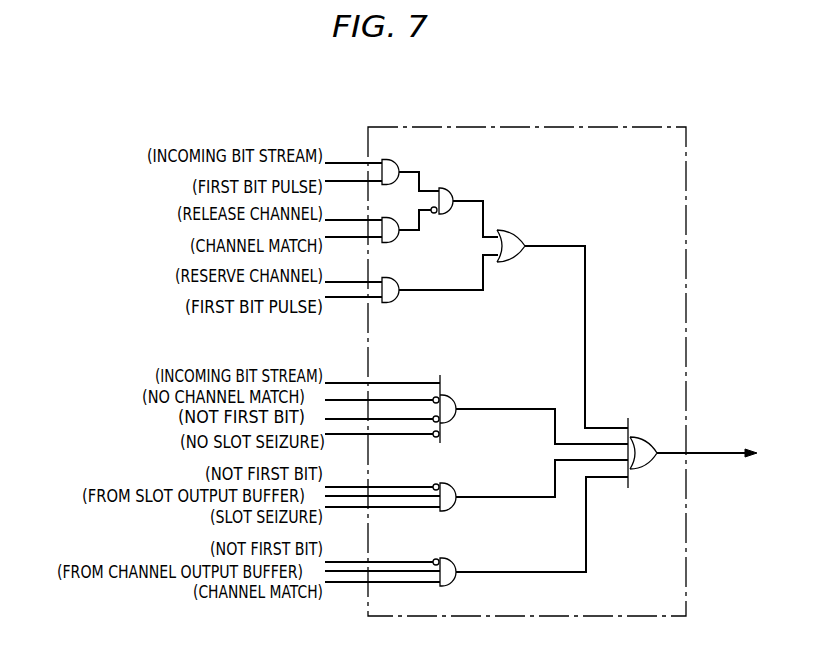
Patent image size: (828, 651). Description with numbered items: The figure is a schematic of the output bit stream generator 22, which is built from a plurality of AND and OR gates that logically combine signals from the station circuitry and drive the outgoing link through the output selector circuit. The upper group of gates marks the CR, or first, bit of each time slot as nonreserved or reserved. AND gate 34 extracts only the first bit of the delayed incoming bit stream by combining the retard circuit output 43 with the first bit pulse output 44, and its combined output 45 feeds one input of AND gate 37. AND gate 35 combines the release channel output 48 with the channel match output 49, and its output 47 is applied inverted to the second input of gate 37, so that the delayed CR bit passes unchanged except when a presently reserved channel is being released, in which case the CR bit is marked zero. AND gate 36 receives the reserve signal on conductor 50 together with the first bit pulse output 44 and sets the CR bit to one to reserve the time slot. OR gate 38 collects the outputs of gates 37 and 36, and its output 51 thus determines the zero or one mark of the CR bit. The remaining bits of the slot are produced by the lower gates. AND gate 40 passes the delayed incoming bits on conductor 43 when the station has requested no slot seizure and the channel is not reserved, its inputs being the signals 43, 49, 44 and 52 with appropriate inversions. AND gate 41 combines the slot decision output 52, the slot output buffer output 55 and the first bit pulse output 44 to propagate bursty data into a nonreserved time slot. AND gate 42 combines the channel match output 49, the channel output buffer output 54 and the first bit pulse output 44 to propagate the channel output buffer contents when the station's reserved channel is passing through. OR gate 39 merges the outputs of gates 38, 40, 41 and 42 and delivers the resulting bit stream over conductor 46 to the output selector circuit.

The output bit stream generator 22 is at (686, 291).
The AND gate 34 is at (388, 165).
The AND gate 35 is at (392, 241).
The AND gate 36 is at (393, 302).
The AND gate 37 is at (455, 190).
The OR gate 38 is at (518, 236).
The OR gate 39 is at (641, 441).
The AND gate 40 is at (453, 397).
The AND gate 41 is at (453, 485).
The AND gate 42 is at (453, 560).
The output of the bit stream retard circuit 43 is at (359, 158).
The output of the first bit pulse circuit 44 is at (359, 181).
The combined output of gate 34 45 is at (424, 183).
The conductor 46 is at (727, 457).
The output of gate 35 47 is at (421, 216).
The release channel output 48 is at (359, 217).
The channel match output 49 is at (359, 242).
The conductor 50 is at (359, 278).
The output of gate 38 51 is at (586, 328).
The output of the slot decision circuit 52 is at (363, 435).
The output of the channel output buffer 54 is at (372, 572).
The output of the slot output buffer 55 is at (373, 496).